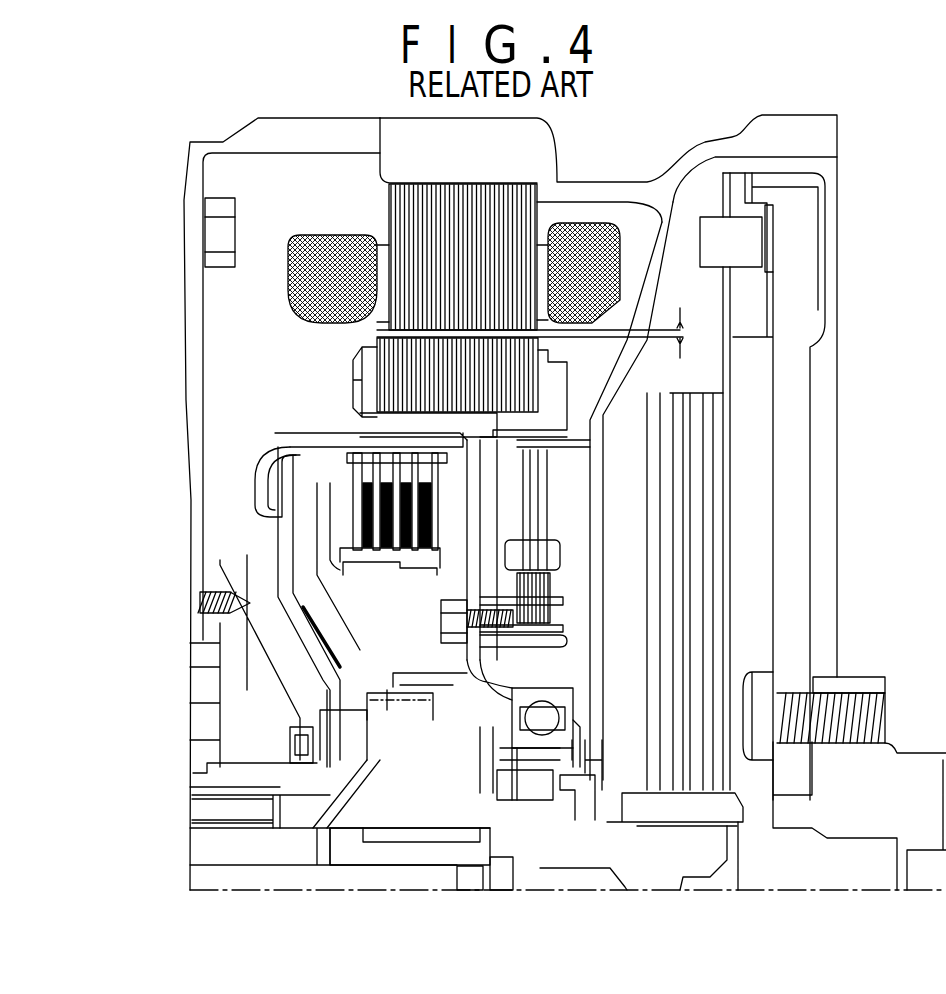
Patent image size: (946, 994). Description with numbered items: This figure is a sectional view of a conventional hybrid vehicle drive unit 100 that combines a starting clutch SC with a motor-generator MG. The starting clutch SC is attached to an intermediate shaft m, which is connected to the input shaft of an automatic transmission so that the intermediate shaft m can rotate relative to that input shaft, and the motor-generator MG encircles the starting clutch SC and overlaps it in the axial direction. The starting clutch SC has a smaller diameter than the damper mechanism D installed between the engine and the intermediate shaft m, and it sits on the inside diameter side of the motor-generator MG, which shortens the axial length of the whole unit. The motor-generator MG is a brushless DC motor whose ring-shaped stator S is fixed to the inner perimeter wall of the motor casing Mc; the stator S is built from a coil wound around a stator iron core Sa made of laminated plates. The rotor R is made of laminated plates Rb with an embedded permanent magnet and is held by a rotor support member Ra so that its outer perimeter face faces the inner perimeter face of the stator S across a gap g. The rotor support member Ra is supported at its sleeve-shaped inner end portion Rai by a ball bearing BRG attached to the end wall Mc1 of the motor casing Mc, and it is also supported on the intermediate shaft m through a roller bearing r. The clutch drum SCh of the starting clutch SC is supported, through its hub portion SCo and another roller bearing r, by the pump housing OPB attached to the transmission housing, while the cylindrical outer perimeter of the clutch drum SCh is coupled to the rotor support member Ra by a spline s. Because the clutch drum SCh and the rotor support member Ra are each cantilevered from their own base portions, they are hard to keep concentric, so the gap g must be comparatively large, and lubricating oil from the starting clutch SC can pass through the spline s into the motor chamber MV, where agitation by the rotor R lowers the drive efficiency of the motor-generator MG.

The hybrid vehicle drive unit 100 is at (158, 206).
The motor-generator MG is at (226, 346).
The motor casing Mc is at (563, 184).
The end wall of motor casing Mc1 is at (623, 358).
The stator S is at (417, 218).
The stator iron core Sa is at (427, 238).
The motor chamber MV is at (264, 288).
The gap g is at (683, 326).
The rotor R is at (348, 352).
The laminated plates Rb is at (420, 390).
The rotor support member Ra is at (478, 492).
The sleeve-shaped inner end portion Rai is at (540, 757).
The starting clutch SC is at (254, 451).
The clutch drum SCh is at (258, 472).
The hub portion SCo is at (370, 812).
The spline s is at (323, 437).
The ball bearing BRG is at (565, 692).
The damper mechanism D is at (811, 348).
The pump housing OPB is at (247, 722).
The roller bearing r is at (215, 782).
The intermediate shaft m is at (633, 858).